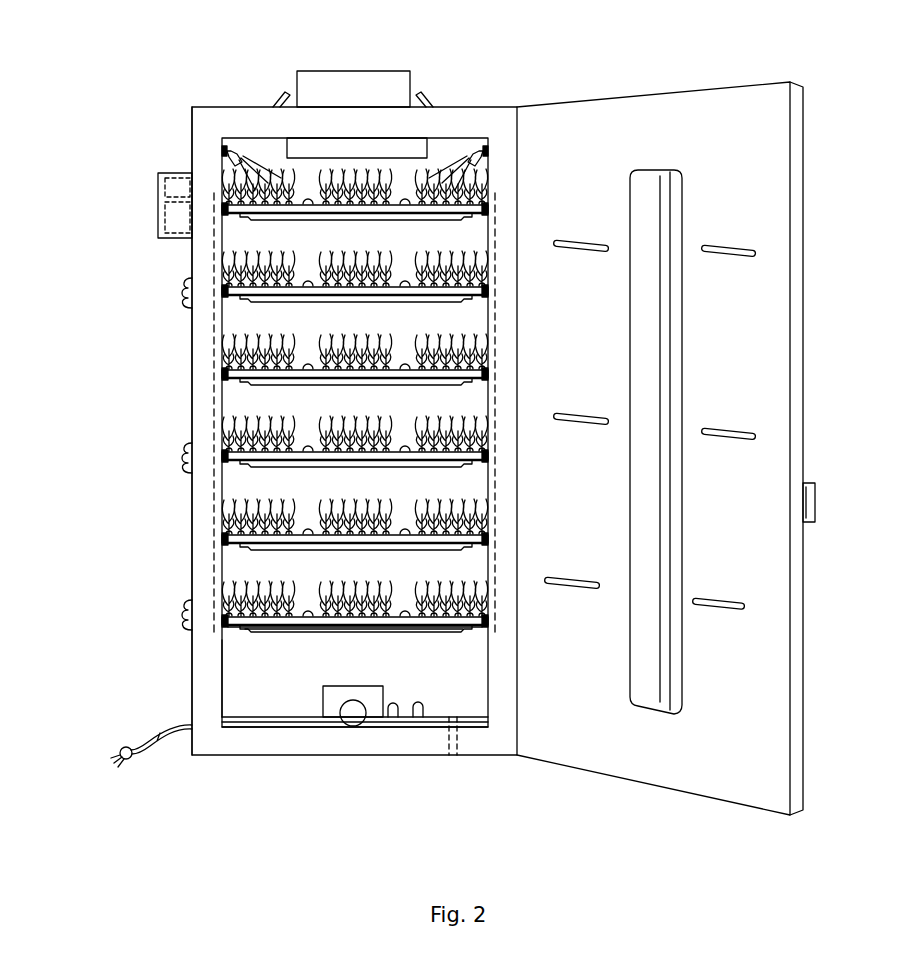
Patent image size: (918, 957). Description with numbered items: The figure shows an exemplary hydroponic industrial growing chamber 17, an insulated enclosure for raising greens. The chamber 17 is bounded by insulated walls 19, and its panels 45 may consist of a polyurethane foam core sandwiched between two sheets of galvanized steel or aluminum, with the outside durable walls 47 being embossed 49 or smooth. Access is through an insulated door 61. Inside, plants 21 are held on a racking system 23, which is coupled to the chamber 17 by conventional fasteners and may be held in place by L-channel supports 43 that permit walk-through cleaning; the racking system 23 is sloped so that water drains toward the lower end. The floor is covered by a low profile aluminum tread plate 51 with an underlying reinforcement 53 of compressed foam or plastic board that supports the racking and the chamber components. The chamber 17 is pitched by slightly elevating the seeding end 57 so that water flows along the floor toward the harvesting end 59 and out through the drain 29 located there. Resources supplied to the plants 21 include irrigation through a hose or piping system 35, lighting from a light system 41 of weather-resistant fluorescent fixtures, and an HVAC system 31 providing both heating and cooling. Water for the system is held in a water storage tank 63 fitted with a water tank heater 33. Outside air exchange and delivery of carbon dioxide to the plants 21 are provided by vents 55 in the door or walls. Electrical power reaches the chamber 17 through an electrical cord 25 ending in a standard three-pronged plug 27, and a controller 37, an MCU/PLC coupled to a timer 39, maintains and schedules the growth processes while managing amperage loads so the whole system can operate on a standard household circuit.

The hydroponic industrial growing chamber 17 is at (473, 107).
The insulated walls 19 is at (208, 140).
The plants 21 is at (234, 583).
The racking system 23 is at (226, 628).
The electrical cord 25 is at (172, 722).
The three-pronged plug 27 is at (140, 762).
The drain 29 is at (457, 740).
The HVAC system 31 is at (357, 83).
The water tank heater 33 is at (353, 716).
The irrigation 35 is at (232, 152).
The controller 37 is at (175, 228).
The timer 39 is at (166, 190).
The light system 41 is at (652, 172).
The L-channel supports 43 is at (213, 335).
The panels 45 is at (222, 665).
The outside durable walls 47 is at (192, 418).
The embossing 49 is at (183, 308).
The aluminum tread plate 51 is at (418, 708).
The underlying reinforcement 53 is at (393, 710).
The vents 55 is at (282, 96).
The seeding end 57 is at (345, 670).
The harvesting end 59 is at (569, 667).
The insulated door 61 is at (680, 755).
The water storage tank 63 is at (322, 700).